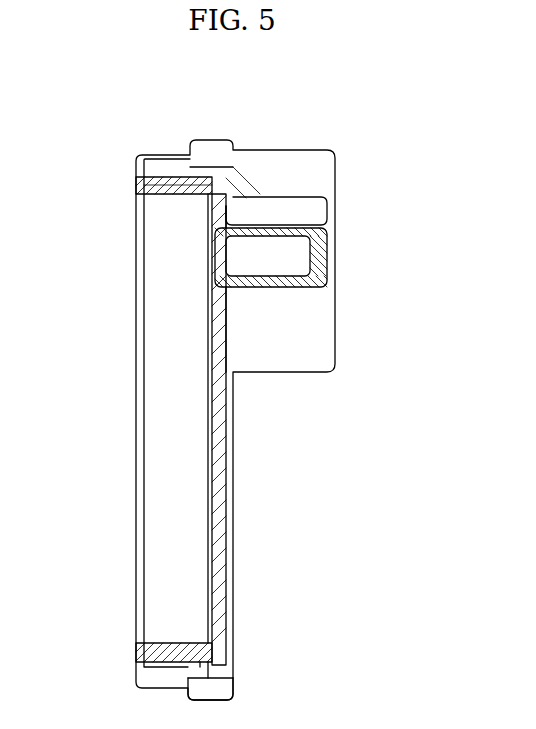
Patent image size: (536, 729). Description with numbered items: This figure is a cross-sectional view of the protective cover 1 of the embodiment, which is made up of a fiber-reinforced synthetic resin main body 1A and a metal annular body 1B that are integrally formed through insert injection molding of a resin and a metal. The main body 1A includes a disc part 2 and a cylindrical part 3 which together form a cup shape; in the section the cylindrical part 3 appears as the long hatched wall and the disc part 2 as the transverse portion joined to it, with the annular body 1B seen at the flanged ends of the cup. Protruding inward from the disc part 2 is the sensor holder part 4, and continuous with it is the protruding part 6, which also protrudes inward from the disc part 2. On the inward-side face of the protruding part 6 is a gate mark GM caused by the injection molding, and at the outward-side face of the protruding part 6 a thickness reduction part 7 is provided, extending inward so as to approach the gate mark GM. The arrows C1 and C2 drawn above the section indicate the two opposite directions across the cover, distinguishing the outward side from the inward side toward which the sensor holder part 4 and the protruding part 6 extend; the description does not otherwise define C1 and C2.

The protective cover 1 is at (377, 182).
The main body 1A is at (368, 430).
The annular body 1B is at (170, 643).
The disc part 2 is at (230, 546).
The cylindrical part 3 is at (237, 684).
The sensor holder part 4 is at (305, 375).
The protruding part 6 is at (286, 291).
The thickness reduction part 7 is at (230, 238).
The gate mark GM is at (330, 252).
The first direction C1 is at (112, 110).
The second direction C2 is at (303, 110).